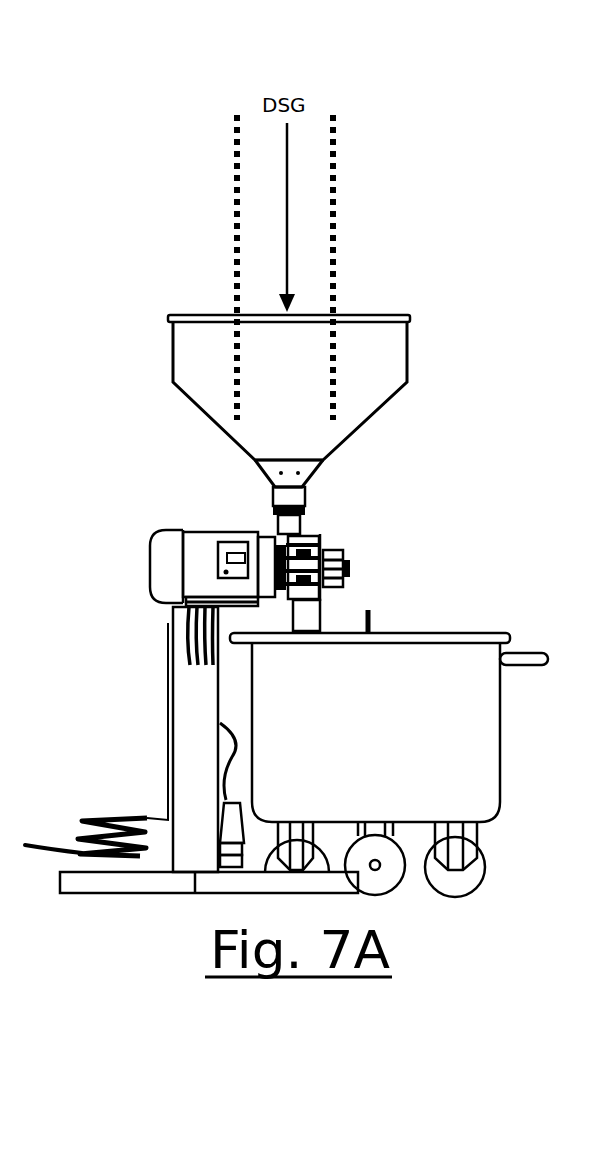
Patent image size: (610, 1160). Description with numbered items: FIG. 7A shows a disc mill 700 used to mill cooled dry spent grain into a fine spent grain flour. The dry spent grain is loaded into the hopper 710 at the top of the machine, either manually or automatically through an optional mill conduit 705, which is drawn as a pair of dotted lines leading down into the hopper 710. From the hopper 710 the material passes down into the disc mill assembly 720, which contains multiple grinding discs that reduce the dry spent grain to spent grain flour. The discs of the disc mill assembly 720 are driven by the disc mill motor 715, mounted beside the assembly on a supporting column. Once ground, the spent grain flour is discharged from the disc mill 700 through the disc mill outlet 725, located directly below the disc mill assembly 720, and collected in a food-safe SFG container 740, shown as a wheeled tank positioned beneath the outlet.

The disc mill 700 is at (165, 503).
The mill conduit 705 is at (336, 198).
The hopper 710 is at (408, 355).
The disc mill motor 715 is at (150, 580).
The disc mill assembly 720 is at (322, 540).
The disc mill outlet 725 is at (323, 620).
The SFG container 740 is at (487, 632).